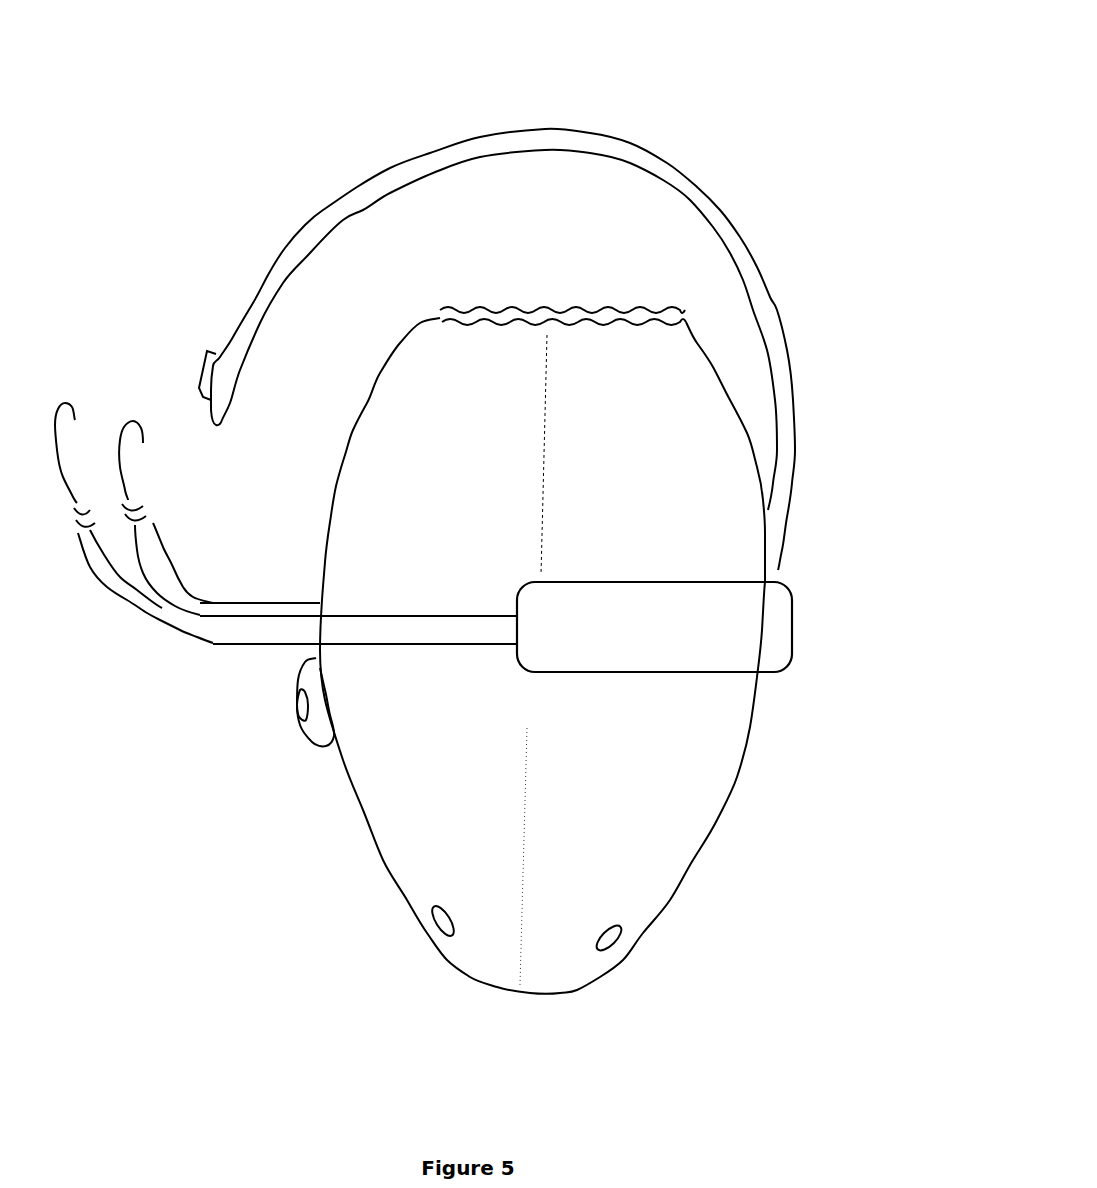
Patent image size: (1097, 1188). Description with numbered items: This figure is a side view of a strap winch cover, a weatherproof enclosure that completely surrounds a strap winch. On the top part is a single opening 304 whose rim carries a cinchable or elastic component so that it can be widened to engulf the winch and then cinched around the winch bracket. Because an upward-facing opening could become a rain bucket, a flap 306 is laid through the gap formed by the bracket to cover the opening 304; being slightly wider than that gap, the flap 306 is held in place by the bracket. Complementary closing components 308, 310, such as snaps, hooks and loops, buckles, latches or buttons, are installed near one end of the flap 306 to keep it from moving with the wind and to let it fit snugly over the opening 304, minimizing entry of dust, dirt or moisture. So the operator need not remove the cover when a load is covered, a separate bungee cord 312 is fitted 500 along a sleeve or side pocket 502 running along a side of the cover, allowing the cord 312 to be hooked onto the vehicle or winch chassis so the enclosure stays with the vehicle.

The fitted bungee cord arrangement 500 is at (838, 125).
The flap 306 is at (652, 138).
The closing component 308 is at (199, 378).
The opening 304 is at (445, 323).
The sleeve or side pocket 502 is at (773, 645).
The bungee cord 312 is at (166, 648).
The closing component 310 is at (283, 730).